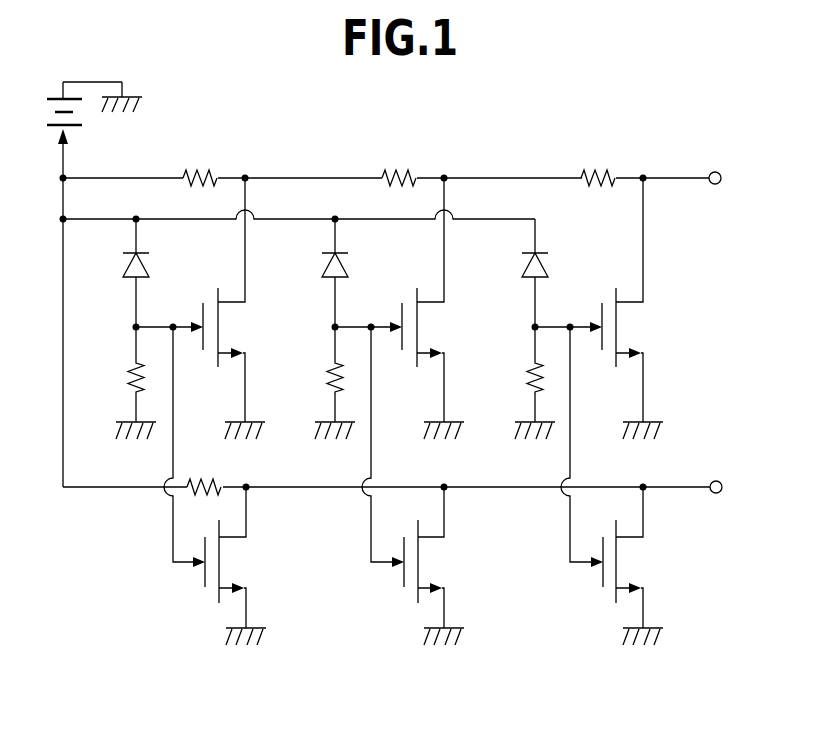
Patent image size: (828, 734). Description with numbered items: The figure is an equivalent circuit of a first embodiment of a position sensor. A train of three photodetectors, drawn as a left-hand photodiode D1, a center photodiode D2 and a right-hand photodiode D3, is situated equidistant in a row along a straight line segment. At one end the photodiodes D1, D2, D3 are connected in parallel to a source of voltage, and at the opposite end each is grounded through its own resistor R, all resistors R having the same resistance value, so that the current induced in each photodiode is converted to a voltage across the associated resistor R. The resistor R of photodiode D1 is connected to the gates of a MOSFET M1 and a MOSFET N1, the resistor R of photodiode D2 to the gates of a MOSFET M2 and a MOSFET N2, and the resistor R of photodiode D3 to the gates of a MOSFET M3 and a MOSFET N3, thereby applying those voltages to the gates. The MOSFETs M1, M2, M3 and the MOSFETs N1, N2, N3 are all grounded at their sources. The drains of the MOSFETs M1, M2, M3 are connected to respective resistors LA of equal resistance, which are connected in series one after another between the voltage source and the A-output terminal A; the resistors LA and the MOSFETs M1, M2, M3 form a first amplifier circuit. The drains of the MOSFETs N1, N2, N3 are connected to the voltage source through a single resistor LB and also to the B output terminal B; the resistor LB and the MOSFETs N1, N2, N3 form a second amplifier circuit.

The resistor LA is at (210, 167).
The resistor LB is at (226, 477).
The left-hand photodiode D1 is at (152, 266).
The center photodiode D2 is at (351, 266).
The right-hand photodiode D3 is at (551, 266).
The resistor R is at (117, 389).
The MOSFET M1 is at (249, 331).
The MOSFET M2 is at (448, 331).
The MOSFET M3 is at (647, 331).
The MOSFET N1 is at (251, 565).
The MOSFET N2 is at (450, 565).
The MOSFET N3 is at (648, 565).
The A-output terminal A is at (726, 179).
The B output terminal B is at (726, 488).